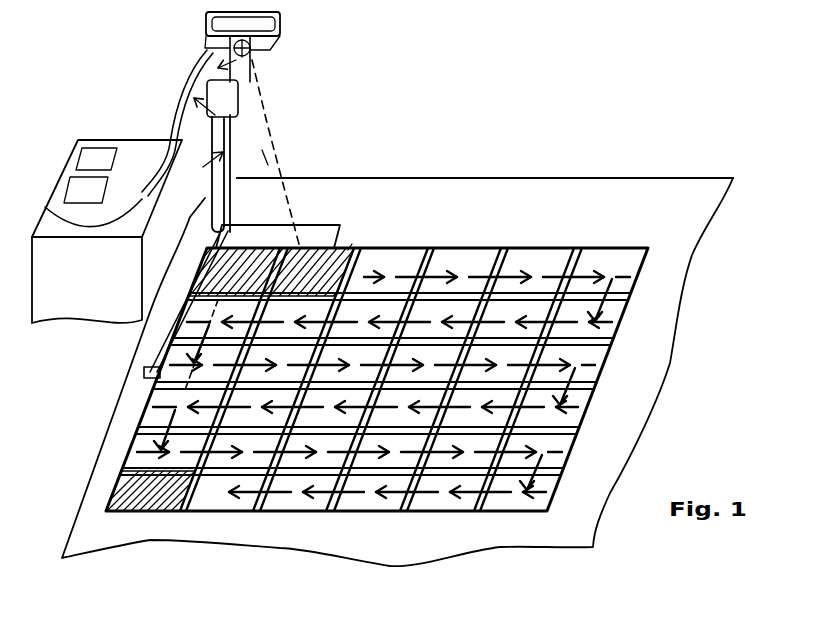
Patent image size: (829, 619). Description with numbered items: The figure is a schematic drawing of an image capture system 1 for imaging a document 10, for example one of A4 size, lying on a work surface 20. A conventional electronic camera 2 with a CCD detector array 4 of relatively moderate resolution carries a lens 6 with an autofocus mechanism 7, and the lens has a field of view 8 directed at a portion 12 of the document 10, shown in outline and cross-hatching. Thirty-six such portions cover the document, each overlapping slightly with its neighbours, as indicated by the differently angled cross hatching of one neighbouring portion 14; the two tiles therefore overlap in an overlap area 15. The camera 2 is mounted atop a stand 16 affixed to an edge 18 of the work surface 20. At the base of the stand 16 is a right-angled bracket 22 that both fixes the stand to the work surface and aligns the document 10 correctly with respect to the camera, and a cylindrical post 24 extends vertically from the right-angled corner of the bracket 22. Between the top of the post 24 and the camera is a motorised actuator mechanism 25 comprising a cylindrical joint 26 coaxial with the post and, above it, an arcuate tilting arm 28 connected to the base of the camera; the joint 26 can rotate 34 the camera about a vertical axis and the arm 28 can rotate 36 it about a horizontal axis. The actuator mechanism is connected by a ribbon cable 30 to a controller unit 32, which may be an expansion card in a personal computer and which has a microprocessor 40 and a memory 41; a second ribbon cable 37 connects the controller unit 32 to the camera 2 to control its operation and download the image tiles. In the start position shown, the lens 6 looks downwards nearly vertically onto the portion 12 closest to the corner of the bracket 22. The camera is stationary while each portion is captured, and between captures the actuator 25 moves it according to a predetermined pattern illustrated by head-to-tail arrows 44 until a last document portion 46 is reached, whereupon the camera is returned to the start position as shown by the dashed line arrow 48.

The image capture system 1 is at (572, 126).
The electronic camera 2 is at (280, 58).
The CCD detector array 4 is at (205, 30).
The lens 6 is at (284, 42).
The autofocus mechanism 7 is at (277, 18).
The field of view 8 is at (270, 158).
The document 10 is at (455, 250).
The portion of the document 12 is at (273, 247).
The neighbouring portion 14 is at (390, 248).
The overlap area 15 is at (348, 250).
The stand 16 is at (240, 165).
The edge of work surface 18 is at (135, 433).
The work surface 20 is at (574, 219).
The right-angled bracket 22 is at (148, 372).
The cylindrical post 24 is at (208, 234).
The motorised actuator mechanism 25 is at (205, 82).
The cylindrical joint 26 is at (258, 90).
The arcuate tilting arm 28 is at (252, 70).
The ribbon cable 30 is at (48, 209).
The controller unit 32 is at (94, 286).
The rotation about vertical axis 34 is at (229, 143).
The rotation about horizontal axis 36 is at (207, 60).
The second ribbon cable 37 is at (168, 118).
The microprocessor 40 is at (88, 140).
The memory 41 is at (66, 176).
The head-to-tail arrows 44 is at (413, 260).
The last document portion 46 is at (112, 490).
The dashed line arrow 48 is at (128, 452).